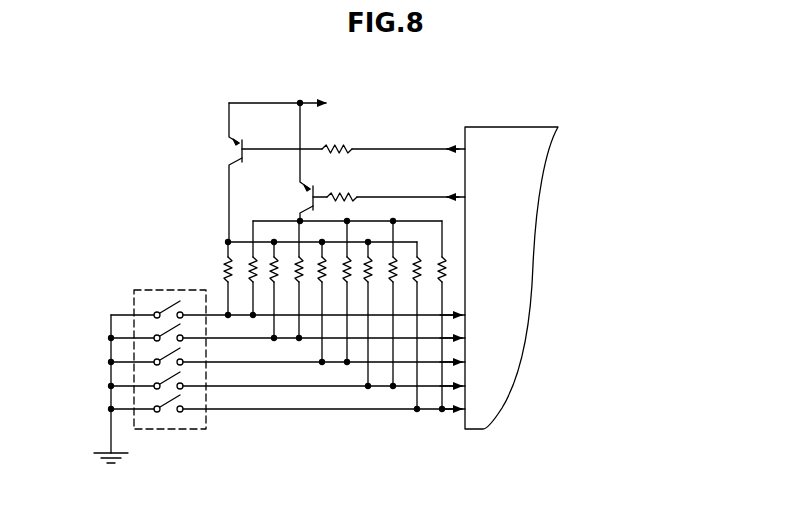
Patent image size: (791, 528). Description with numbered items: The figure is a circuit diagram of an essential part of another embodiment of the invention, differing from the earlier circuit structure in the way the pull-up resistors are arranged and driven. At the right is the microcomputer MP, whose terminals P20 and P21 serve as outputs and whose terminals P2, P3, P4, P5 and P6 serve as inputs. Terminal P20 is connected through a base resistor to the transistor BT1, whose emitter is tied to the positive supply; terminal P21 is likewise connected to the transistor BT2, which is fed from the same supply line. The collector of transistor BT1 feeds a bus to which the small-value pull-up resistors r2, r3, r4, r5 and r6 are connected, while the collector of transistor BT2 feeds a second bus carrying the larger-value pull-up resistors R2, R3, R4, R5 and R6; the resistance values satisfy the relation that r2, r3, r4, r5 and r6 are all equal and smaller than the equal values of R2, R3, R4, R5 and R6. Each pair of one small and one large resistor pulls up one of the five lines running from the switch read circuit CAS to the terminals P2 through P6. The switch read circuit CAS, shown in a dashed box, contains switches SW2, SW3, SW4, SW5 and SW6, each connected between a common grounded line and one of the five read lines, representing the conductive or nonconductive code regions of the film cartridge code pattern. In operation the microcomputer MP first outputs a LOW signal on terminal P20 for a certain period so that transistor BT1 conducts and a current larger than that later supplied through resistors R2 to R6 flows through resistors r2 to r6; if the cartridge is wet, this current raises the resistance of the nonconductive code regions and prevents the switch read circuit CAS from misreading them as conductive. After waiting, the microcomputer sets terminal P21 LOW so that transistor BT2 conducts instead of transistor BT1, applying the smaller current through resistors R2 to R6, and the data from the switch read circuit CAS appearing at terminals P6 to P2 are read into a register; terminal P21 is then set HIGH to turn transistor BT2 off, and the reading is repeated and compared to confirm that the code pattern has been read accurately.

The transistor BT1 is at (232, 137).
The transistor BT2 is at (305, 182).
The microcomputer MP is at (548, 138).
The terminal P20 is at (487, 150).
The terminal P21 is at (487, 198).
The terminal P2 is at (337, 317).
The terminal P3 is at (337, 341).
The terminal P4 is at (337, 364).
The terminal P5 is at (337, 387).
The terminal P6 is at (337, 410).
The pull-up resistor r2 is at (225, 262).
The pull-up resistor R2 is at (242, 268).
The pull-up resistor r3 is at (264, 290).
The pull-up resistor R3 is at (288, 279).
The pull-up resistor r4 is at (312, 302).
The pull-up resistor R4 is at (336, 291).
The pull-up resistor r5 is at (359, 314).
The pull-up resistor R5 is at (382, 303).
The pull-up resistor r6 is at (406, 325).
The pull-up resistor R6 is at (431, 315).
The switch SW2 is at (167, 305).
The switch SW3 is at (165, 328).
The switch SW4 is at (165, 354).
The switch SW5 is at (165, 377).
The switch SW6 is at (165, 400).
The switch read circuit CAS is at (156, 430).